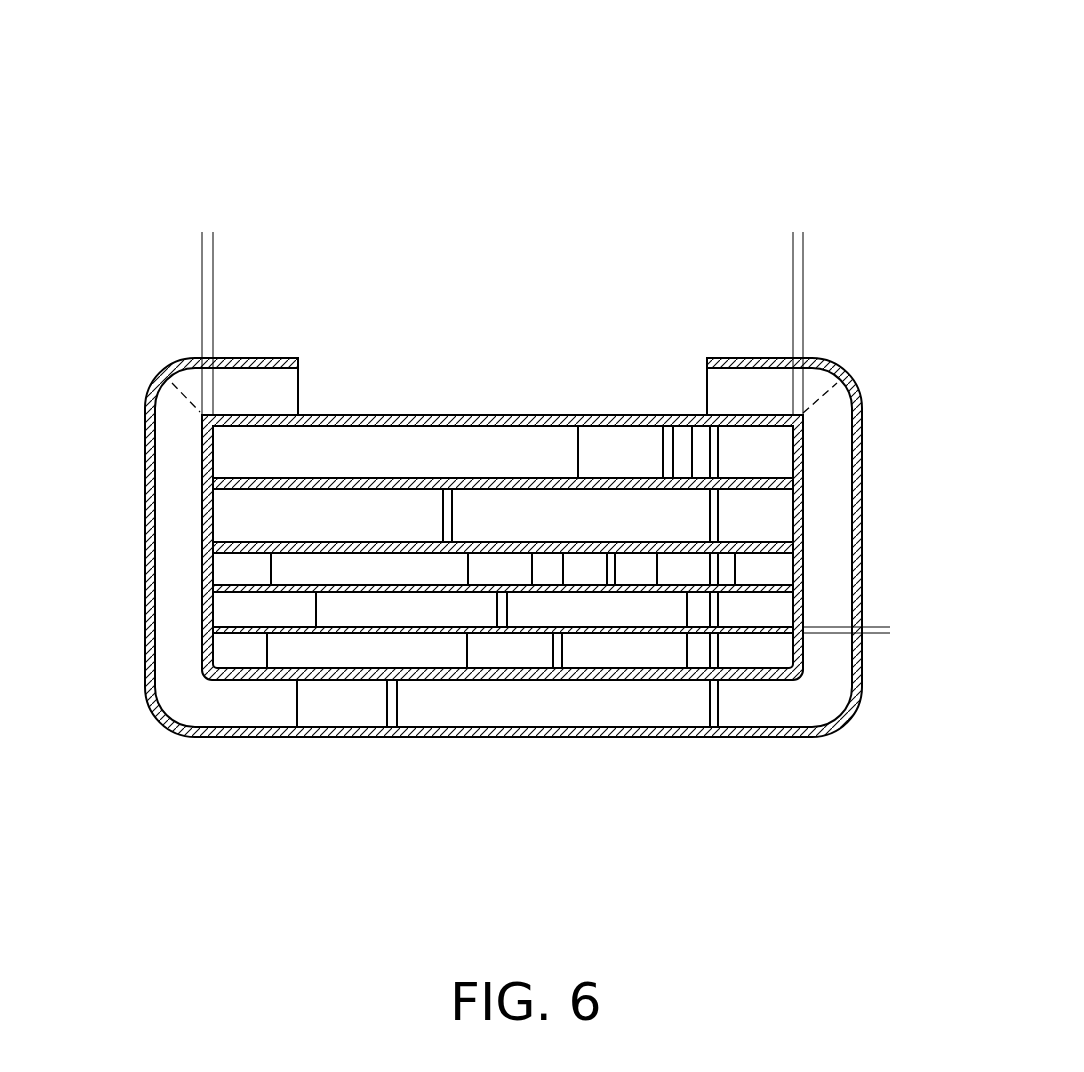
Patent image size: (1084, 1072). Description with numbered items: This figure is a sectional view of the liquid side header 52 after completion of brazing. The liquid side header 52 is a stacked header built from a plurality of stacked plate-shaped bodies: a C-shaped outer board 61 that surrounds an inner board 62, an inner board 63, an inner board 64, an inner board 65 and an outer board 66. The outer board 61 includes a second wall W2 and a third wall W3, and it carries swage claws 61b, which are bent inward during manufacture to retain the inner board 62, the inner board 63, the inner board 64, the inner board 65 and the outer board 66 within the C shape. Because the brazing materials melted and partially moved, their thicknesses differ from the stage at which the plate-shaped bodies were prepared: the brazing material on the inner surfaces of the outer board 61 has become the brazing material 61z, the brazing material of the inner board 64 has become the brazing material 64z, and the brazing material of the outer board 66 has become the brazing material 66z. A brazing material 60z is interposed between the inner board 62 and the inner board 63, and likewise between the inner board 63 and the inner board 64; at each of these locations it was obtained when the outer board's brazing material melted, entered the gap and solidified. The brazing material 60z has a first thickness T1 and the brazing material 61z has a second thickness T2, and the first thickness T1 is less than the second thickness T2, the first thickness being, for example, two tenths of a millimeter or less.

The liquid side header 52 is at (178, 116).
The outer board 61 is at (535, 703).
The swage claws 61b is at (272, 392).
The brazing material 61z is at (735, 677).
The inner board 62 is at (218, 643).
The inner board 63 is at (218, 603).
The inner board 64 is at (218, 568).
The brazing material 64z is at (723, 547).
The inner board 65 is at (233, 518).
The outer board 66 is at (233, 457).
The brazing material 66z is at (740, 478).
The brazing material 60z is at (763, 587).
The second wall W2 is at (185, 432).
The third wall W3 is at (832, 427).
The first thickness T1 is at (878, 597).
The second thickness T2 is at (221, 255).